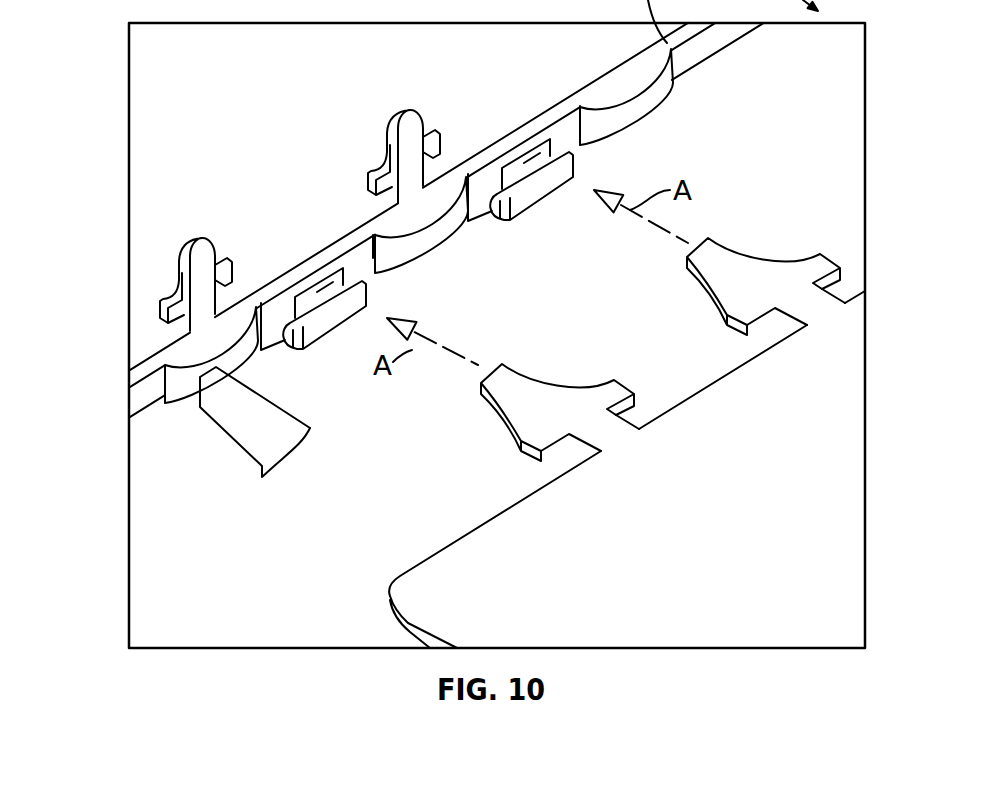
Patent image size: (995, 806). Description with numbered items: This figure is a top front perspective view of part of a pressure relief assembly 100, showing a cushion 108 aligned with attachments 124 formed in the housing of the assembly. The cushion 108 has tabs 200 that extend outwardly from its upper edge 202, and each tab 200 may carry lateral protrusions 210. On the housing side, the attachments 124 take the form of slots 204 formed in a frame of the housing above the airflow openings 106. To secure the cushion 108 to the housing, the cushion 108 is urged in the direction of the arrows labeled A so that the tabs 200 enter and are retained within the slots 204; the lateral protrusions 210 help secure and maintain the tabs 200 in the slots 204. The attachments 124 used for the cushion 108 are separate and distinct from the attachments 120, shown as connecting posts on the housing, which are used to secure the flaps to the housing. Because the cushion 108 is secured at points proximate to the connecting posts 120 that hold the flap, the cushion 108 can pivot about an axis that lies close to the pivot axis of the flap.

The pressure relief assembly 100 is at (117, 14).
The airflow openings 106 is at (240, 433).
The cushion 108 is at (820, 460).
The attachments (connecting posts) 120 is at (188, 240).
The attachments 124 is at (334, 270).
The tabs 200 is at (770, 262).
The upper edge 202 is at (725, 372).
The slots 204 is at (308, 295).
The lateral protrusions 210 is at (628, 408).